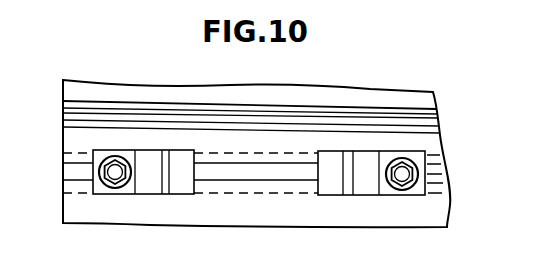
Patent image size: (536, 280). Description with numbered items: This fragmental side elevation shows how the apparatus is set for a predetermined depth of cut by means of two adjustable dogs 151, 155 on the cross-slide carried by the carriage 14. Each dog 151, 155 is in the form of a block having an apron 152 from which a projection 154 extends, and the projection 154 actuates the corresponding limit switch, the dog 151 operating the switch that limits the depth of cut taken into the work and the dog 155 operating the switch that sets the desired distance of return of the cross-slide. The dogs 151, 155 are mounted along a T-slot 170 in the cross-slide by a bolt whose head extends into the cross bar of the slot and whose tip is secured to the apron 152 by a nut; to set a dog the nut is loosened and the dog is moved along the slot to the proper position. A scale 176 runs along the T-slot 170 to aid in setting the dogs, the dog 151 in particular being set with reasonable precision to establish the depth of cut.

The carriage 14 is at (249, 221).
The adjustable dog 151 is at (351, 197).
The apron 152 is at (117, 148).
The projection 154 is at (166, 158).
The adjustable dog 155 is at (141, 175).
The T-slot 170 is at (70, 170).
The scale 176 is at (193, 104).